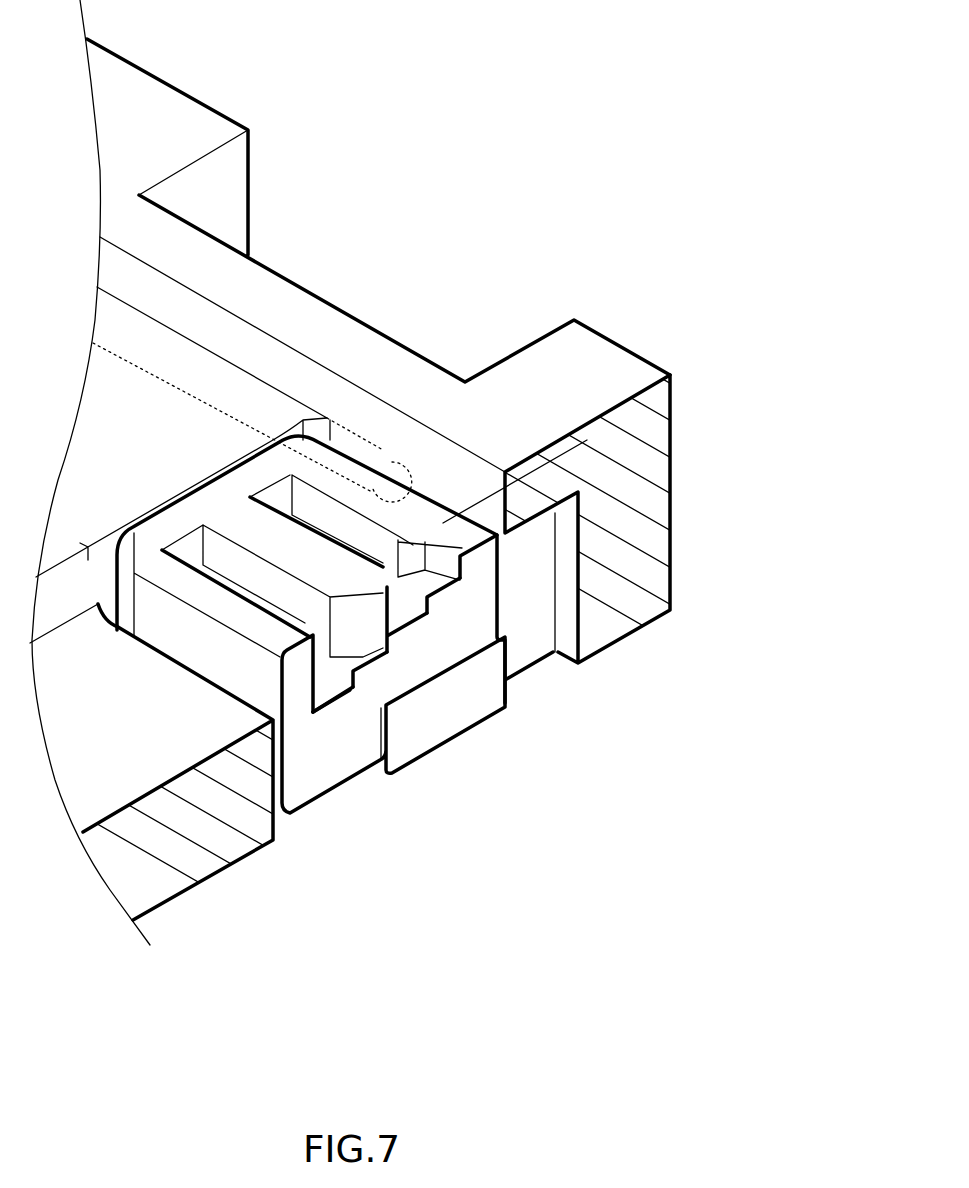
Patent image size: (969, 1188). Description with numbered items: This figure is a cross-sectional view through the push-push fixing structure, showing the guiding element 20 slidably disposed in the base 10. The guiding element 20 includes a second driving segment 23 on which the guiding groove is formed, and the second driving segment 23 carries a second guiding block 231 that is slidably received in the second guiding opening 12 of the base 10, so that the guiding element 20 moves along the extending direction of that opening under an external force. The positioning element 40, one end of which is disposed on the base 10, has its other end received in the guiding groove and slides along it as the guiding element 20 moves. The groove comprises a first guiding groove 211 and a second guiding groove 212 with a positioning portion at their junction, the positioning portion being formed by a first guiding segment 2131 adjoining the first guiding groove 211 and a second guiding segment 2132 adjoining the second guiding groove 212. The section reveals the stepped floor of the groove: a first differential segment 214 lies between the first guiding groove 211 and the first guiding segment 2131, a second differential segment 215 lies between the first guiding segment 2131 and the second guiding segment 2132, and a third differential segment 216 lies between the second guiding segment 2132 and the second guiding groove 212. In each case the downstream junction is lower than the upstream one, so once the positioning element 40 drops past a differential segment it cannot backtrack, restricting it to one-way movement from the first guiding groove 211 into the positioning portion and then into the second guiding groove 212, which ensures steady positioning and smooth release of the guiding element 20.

The base 10 is at (177, 86).
The second guiding opening 12 is at (280, 803).
The guiding element 20 is at (450, 486).
The second driving segment 23 is at (507, 527).
The positioning element 40 is at (250, 355).
The first guiding groove 211 is at (462, 560).
The second guiding groove 212 is at (420, 610).
The first differential segment 214 is at (450, 585).
The second differential segment 215 is at (460, 605).
The third differential segment 216 is at (460, 640).
The second guiding block 231 is at (335, 725).
The first guiding segment 2131 is at (440, 605).
The second guiding segment 2132 is at (495, 640).